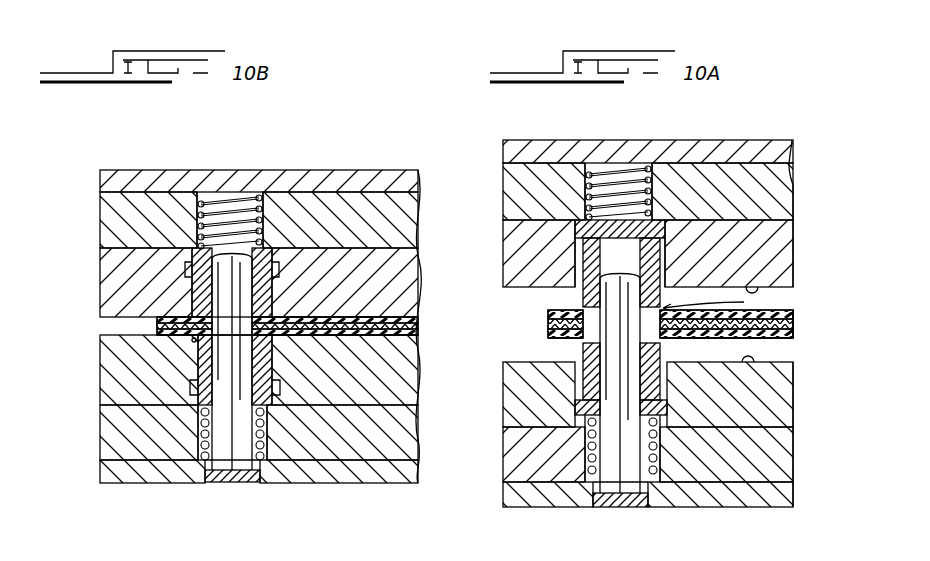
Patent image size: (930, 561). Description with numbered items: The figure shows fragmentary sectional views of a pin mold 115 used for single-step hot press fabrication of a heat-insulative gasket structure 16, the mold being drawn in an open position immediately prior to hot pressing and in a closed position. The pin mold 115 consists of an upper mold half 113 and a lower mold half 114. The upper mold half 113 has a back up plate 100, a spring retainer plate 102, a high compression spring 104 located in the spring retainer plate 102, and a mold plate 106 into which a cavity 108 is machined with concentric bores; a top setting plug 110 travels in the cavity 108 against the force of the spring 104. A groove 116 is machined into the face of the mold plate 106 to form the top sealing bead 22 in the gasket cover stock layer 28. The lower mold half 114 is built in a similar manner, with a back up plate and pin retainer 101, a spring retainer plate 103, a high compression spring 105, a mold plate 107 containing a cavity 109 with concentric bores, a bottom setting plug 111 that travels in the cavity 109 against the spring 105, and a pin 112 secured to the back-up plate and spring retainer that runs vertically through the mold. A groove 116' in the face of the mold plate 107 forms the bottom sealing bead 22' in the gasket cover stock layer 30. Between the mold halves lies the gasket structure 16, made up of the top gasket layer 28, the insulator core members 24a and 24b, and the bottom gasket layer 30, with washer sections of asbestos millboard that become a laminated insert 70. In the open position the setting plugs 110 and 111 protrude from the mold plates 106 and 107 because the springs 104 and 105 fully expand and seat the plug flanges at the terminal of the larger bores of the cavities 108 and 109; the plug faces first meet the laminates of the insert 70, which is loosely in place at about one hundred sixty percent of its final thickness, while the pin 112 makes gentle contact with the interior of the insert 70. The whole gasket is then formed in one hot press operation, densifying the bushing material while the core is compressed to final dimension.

In FIG. 10B, the gasket structure 16 is at (86, 346).
In FIG. 10A, the gasket structure 16 is at (800, 345).
In FIG. 10B, the top sealing bead 22 is at (370, 295).
In FIG. 10B, the bottom sealing bead 22' is at (351, 360).
In FIG. 10B, the insulator core member 24a is at (420, 324).
In FIG. 10A, the insulator core member 24a is at (548, 327).
In FIG. 10B, the insulator core member 24b is at (420, 331).
In FIG. 10A, the insulator core member 24b is at (548, 335).
In FIG. 10B, the top gasket layer 28 is at (420, 318).
In FIG. 10A, the top gasket layer 28 is at (548, 318).
In FIG. 10B, the bottom gasket layer 30 is at (420, 340).
In FIG. 10A, the bottom gasket layer 30 is at (548, 343).
In FIG. 10B, the laminated insert 70 is at (193, 339).
In FIG. 10A, the laminated insert 70 is at (716, 299).
In FIG. 10B, the back up plate 100 is at (407, 178).
In FIG. 10A, the back up plate 100 is at (512, 152).
In FIG. 10B, the back up plate and pin retainer 101 is at (393, 473).
In FIG. 10A, the back up plate and pin retainer 101 is at (507, 493).
In FIG. 10B, the spring retainer plate 102 is at (405, 215).
In FIG. 10A, the spring retainer plate 102 is at (524, 200).
In FIG. 10B, the spring retainer plate 103 is at (403, 437).
In FIG. 10A, the spring retainer plate 103 is at (507, 440).
In FIG. 10B, the high compression spring 104 is at (258, 190).
In FIG. 10A, the high compression spring 104 is at (652, 166).
In FIG. 10B, the high compression spring 105 is at (205, 480).
In FIG. 10A, the high compression spring 105 is at (580, 500).
In FIG. 10B, the mold plate 106 is at (405, 278).
In FIG. 10A, the mold plate 106 is at (503, 255).
In FIG. 10B, the mold plate 107 is at (393, 383).
In FIG. 10A, the mold plate 107 is at (507, 383).
In FIG. 10B, the cavity 108 is at (282, 266).
In FIG. 10A, the cavity 108 is at (583, 232).
In FIG. 10B, the cavity 109 is at (277, 383).
In FIG. 10A, the cavity 109 is at (580, 422).
In FIG. 10B, the top setting plug 110 is at (192, 268).
In FIG. 10A, the top setting plug 110 is at (578, 250).
In FIG. 10B, the bottom setting plug 111 is at (190, 376).
In FIG. 10A, the bottom setting plug 111 is at (507, 394).
In FIG. 10B, the pin 112 is at (197, 290).
In FIG. 10A, the pin 112 is at (505, 275).
In FIG. 10B, the upper mold half 113 is at (86, 165).
In FIG. 10A, the upper mold half 113 is at (800, 290).
In FIG. 10B, the lower mold half 114 is at (86, 340).
In FIG. 10A, the lower mold half 114 is at (800, 507).
In FIG. 10A, the pin mold 115 is at (773, 124).
In FIG. 10A, the groove 116 is at (801, 270).
In FIG. 10A, the groove 116' is at (802, 351).